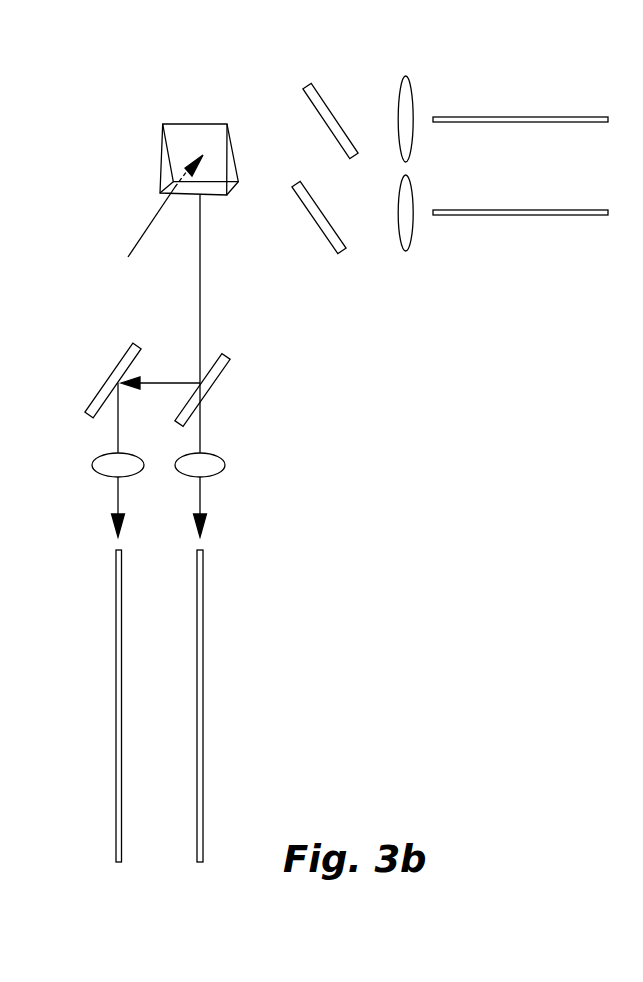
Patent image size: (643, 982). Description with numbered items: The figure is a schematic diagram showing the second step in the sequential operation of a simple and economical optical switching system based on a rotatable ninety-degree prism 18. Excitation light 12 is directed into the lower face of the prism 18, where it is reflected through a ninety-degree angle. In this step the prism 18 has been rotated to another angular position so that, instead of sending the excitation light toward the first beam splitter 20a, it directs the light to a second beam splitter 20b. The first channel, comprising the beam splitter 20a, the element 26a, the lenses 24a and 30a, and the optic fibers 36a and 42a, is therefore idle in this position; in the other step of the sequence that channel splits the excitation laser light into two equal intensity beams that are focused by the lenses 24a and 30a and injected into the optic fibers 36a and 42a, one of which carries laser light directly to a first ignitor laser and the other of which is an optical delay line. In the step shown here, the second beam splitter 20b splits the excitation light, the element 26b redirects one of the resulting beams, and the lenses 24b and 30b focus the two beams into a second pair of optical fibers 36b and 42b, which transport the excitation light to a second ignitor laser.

The excitation light 12 is at (150, 219).
The rotatable 90-degree prism 18 is at (195, 121).
The beam splitter 20a is at (310, 81).
The second beam splitter 20b is at (218, 393).
The lens 24a is at (406, 76).
The lens 24b is at (233, 465).
The mirror 26a is at (340, 254).
The mirror 26b is at (106, 372).
The lens 30a is at (405, 253).
The lens 30b is at (86, 465).
The optic fiber 36a is at (512, 217).
The optical fiber 36b is at (116, 686).
The optic fiber 42a is at (515, 114).
The optical fiber 42b is at (206, 676).